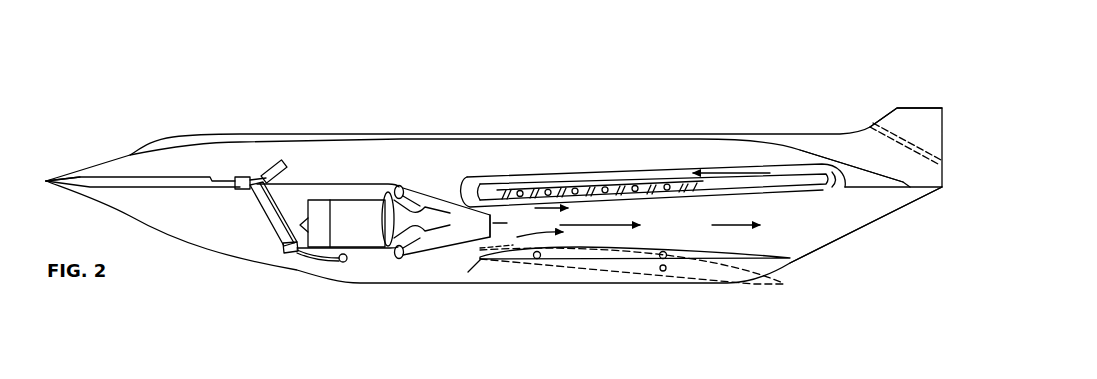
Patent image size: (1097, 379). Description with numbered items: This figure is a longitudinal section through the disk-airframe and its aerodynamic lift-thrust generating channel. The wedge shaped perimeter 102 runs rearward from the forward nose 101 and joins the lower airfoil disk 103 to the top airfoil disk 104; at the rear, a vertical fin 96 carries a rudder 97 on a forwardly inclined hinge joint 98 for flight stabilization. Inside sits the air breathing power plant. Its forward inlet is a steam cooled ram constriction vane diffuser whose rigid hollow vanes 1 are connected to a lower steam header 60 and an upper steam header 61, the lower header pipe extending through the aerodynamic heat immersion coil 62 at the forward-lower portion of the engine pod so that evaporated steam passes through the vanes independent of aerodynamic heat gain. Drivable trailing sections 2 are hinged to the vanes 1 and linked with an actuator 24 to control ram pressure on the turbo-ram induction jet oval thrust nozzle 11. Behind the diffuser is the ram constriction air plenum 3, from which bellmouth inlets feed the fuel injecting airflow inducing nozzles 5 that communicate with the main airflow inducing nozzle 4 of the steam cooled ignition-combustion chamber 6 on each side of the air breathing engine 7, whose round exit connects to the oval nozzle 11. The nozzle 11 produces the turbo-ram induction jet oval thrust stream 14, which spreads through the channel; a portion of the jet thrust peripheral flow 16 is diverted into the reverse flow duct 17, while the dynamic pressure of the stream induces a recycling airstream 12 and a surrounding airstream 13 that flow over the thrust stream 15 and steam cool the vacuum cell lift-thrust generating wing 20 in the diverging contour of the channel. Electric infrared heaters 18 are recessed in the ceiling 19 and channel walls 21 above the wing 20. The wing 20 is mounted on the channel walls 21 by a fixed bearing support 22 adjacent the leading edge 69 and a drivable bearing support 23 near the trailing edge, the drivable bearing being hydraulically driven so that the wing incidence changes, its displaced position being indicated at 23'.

The hollow vanes 1 is at (262, 213).
The drivable trailing sections 2 is at (272, 204).
The ram constriction air plenum 3 is at (327, 190).
The main airflow inducing nozzle 4 is at (383, 222).
The fuel injecting airflow inducing nozzles 5 is at (403, 186).
The ignition-combustion chamber 6 is at (427, 202).
The air breathing engine 7 is at (350, 231).
The turbo-ram induction jet oval thrust nozzle 11 is at (488, 225).
The recycling airstream 12 is at (539, 207).
The surrounding airstream 13 is at (521, 238).
The turbo-ram induction jet oval thrust stream 14 is at (497, 225).
The thrust stream 15 is at (660, 225).
The jet thrust peripheral flow 16 is at (837, 187).
The reverse flow duct 17 is at (602, 177).
The electric infrared heaters 18 is at (648, 195).
The ceiling 19 is at (752, 193).
The vacuum cell lift-thrust generating wing 20 is at (742, 251).
The channel walls 21 is at (793, 228).
The fixed bearing support 22 is at (537, 260).
The drivable bearing support 23 is at (675, 242).
The deflected wing pivot 23' is at (631, 280).
The actuator 24 is at (285, 165).
The lower steam header 60 is at (283, 252).
The upper steam header 61 is at (243, 175).
The aerodynamic heat immersion coil 62 is at (320, 262).
The leading edge 69 is at (472, 268).
The vertical fins 96 is at (890, 158).
The rudders 97 is at (903, 125).
The hinge joint 98 is at (868, 125).
The forward nose 101 is at (48, 170).
The wedge shaped perimeter 102 is at (157, 178).
The lower airfoil disk 103 is at (232, 258).
The top airfoil disk 104 is at (377, 135).